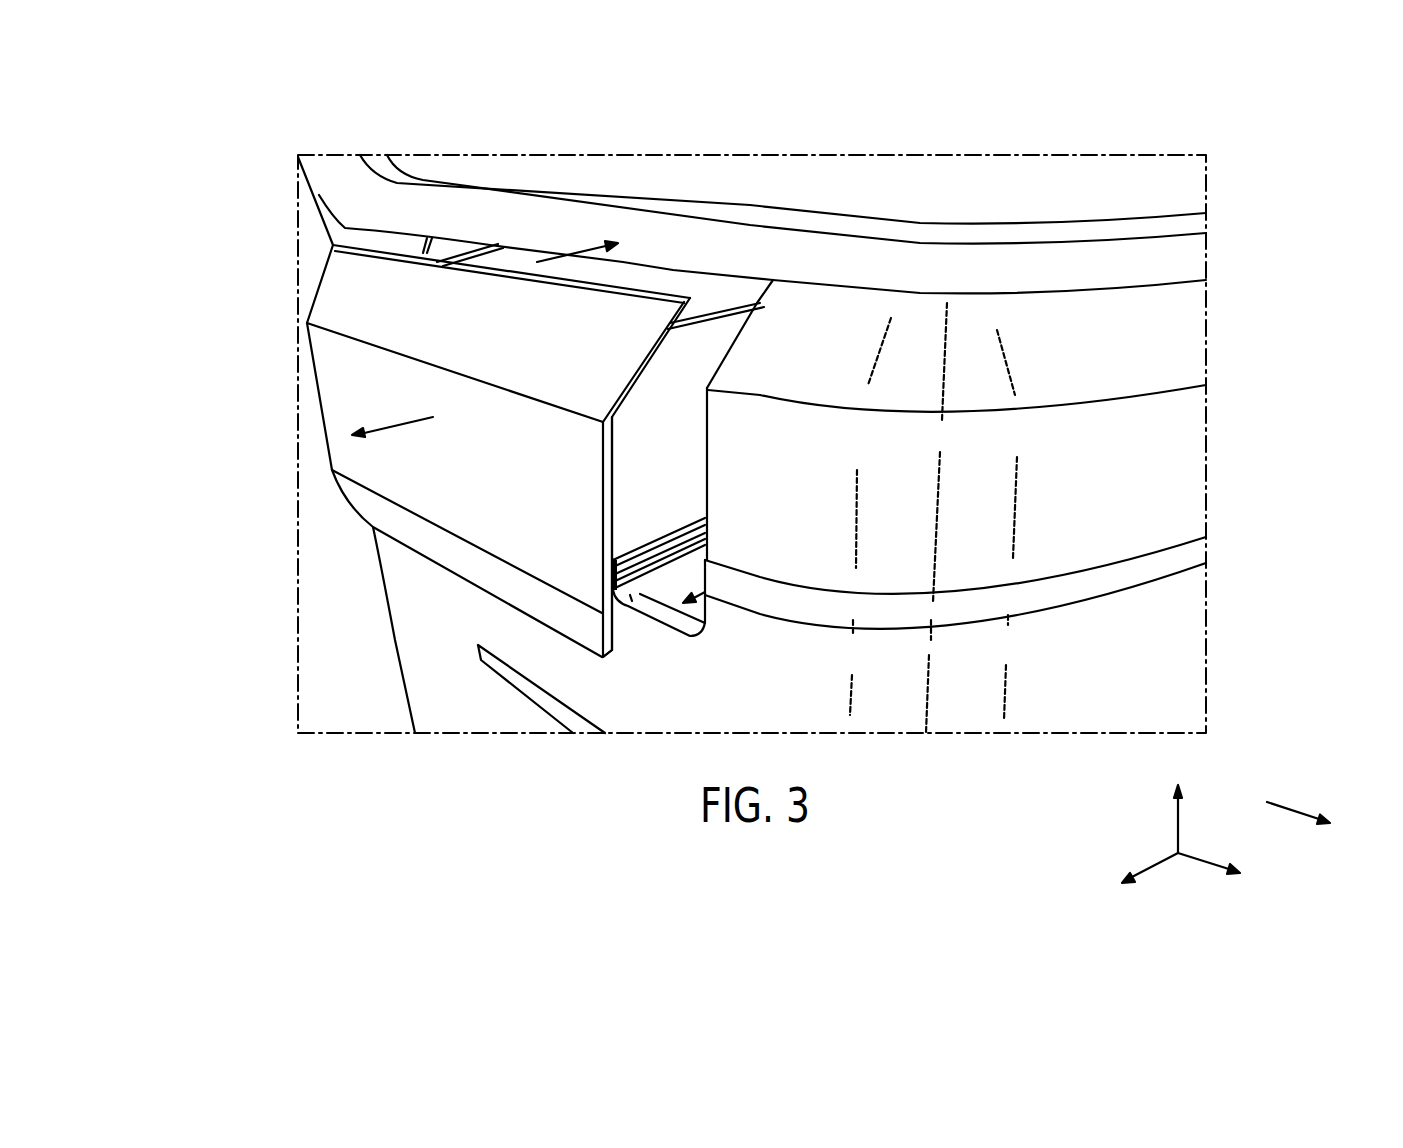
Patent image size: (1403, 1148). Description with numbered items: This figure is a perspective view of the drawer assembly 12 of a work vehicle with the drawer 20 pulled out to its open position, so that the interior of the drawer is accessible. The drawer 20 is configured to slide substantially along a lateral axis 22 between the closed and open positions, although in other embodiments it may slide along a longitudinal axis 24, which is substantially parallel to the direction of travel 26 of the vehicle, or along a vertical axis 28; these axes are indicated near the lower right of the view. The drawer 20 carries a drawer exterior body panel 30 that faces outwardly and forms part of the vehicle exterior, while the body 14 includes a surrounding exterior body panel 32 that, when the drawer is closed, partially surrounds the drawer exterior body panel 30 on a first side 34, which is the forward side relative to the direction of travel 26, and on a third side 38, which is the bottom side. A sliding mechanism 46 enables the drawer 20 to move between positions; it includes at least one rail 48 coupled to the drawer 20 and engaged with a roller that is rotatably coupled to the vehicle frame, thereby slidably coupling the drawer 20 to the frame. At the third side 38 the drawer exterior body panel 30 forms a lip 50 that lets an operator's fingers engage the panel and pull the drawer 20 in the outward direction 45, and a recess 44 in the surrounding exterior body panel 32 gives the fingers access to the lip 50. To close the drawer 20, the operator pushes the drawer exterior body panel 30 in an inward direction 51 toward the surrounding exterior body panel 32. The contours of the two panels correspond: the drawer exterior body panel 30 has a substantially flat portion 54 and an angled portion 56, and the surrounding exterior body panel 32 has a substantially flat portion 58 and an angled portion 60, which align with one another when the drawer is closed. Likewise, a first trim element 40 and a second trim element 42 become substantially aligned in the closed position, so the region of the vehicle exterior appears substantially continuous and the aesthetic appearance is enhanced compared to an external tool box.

The drawer assembly 12 is at (645, 245).
The body 14 is at (913, 325).
The drawer 20 is at (685, 417).
The lateral axis 22 is at (1153, 867).
The longitudinal axis 24 is at (1205, 860).
The direction of travel 26 is at (1290, 813).
The vertical axis 28 is at (1180, 838).
The drawer exterior body panel 30 is at (557, 558).
The exterior body panel 32 is at (929, 629).
The first side 34 is at (610, 467).
The third side 38 is at (478, 590).
The first trim element 40 is at (760, 590).
The second trim element 42 is at (440, 549).
The recess 44 is at (704, 617).
The outward direction 45 is at (397, 423).
The sliding mechanism 46 is at (683, 570).
The rail 48 is at (688, 518).
The lip 50 is at (603, 660).
The inward direction 51 is at (583, 248).
The substantially flat portion 54 is at (340, 408).
The angled portion 56 is at (360, 297).
The substantially flat portion 58 is at (825, 436).
The angled portion 60 is at (847, 310).